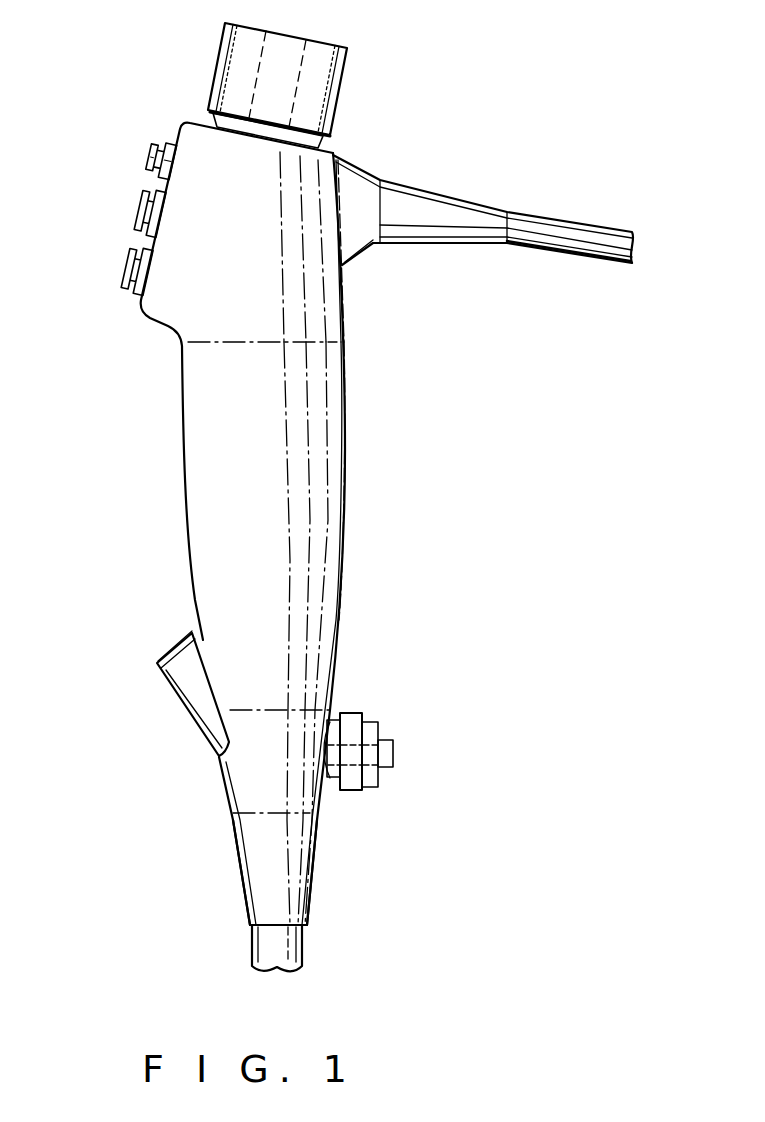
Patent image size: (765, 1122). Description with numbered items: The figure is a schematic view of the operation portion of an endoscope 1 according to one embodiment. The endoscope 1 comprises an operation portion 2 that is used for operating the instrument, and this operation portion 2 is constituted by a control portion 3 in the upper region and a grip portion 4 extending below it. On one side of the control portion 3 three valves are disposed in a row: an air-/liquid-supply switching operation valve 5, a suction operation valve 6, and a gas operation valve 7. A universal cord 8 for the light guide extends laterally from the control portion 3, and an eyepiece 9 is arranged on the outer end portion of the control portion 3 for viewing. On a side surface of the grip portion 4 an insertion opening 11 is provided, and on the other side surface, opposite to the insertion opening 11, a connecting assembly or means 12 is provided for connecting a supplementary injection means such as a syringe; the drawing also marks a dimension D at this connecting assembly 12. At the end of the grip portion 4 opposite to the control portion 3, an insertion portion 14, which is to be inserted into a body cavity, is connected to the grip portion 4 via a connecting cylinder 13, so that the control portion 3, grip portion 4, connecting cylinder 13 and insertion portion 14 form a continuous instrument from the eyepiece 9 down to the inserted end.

The endoscope 1 is at (160, 496).
The operation portion 2 is at (352, 512).
The control portion 3 is at (318, 313).
The grip portion 4 is at (328, 445).
The air-/liquid-supply switching operation valve 5 is at (125, 275).
The suction operation valve 6 is at (138, 220).
The gas operation valve 7 is at (148, 165).
The universal cord 8 is at (597, 258).
The eyepiece 9 is at (338, 48).
The insertion opening 11 is at (192, 699).
The connecting assembly 12 is at (368, 760).
The knob diameter D is at (388, 724).
The connecting cylinder 13 is at (298, 882).
The insertion portion 14 is at (304, 957).